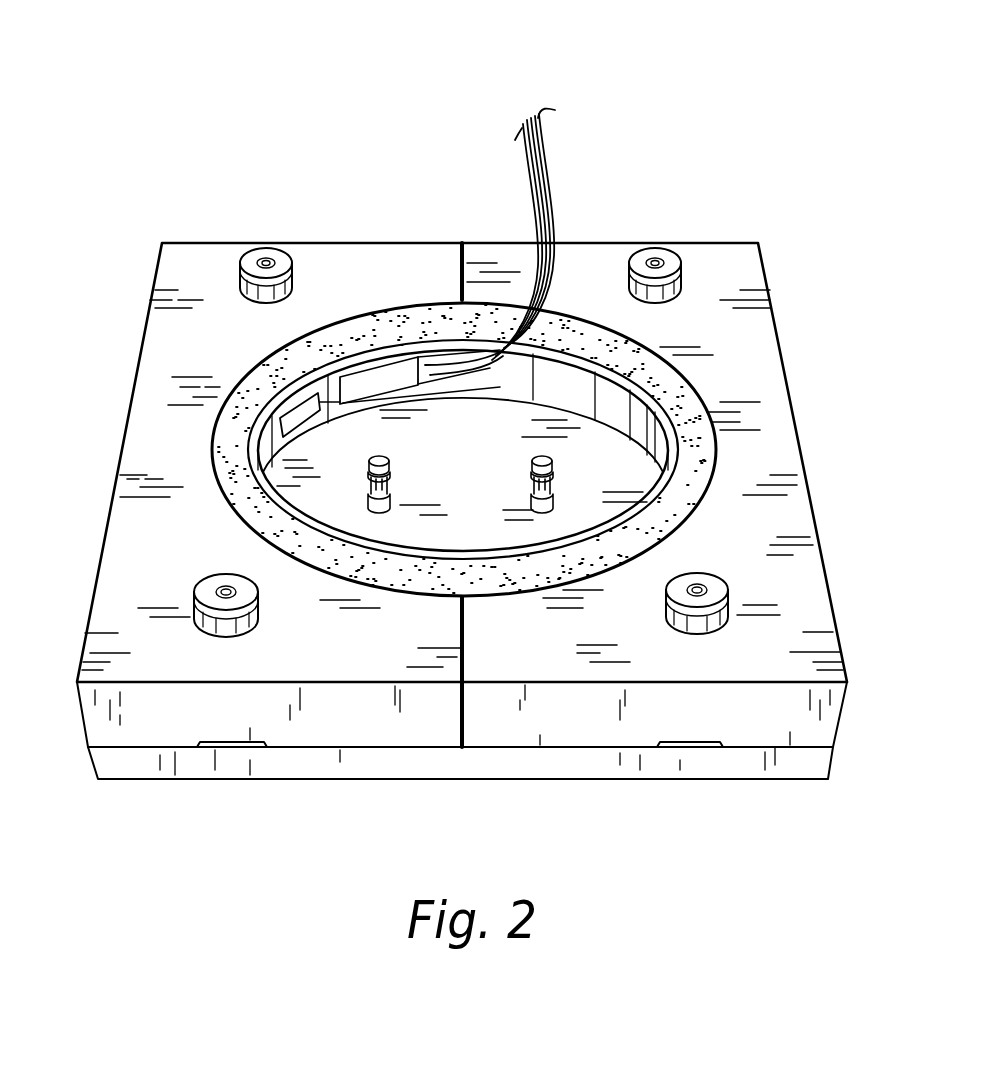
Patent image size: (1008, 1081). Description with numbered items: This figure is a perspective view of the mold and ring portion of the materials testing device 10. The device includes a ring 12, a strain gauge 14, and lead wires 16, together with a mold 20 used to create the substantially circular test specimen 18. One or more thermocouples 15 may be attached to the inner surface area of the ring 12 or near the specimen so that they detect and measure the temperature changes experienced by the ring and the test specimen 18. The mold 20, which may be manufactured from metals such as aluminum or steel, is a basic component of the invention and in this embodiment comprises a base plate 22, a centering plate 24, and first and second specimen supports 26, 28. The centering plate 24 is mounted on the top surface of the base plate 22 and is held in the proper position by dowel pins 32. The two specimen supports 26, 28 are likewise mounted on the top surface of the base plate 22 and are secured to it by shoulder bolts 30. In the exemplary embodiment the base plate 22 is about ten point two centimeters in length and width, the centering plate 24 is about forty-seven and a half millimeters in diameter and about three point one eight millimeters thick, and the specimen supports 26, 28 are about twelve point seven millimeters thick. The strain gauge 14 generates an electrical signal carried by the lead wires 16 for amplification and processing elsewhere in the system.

The materials testing device 10 is at (185, 88).
The ring 12 is at (263, 399).
The strain gauge 14 is at (370, 374).
The thermocouple 15 is at (293, 412).
The lead wires 16 is at (556, 215).
The test specimen 18 is at (223, 462).
The mold 20 is at (803, 272).
The base plate 22 is at (142, 772).
The centering plate 24 is at (595, 430).
The first specimen support 26 is at (418, 738).
The second specimen support 28 is at (788, 738).
The shoulder bolts 30 is at (245, 258).
The dowel pins 32 is at (553, 472).